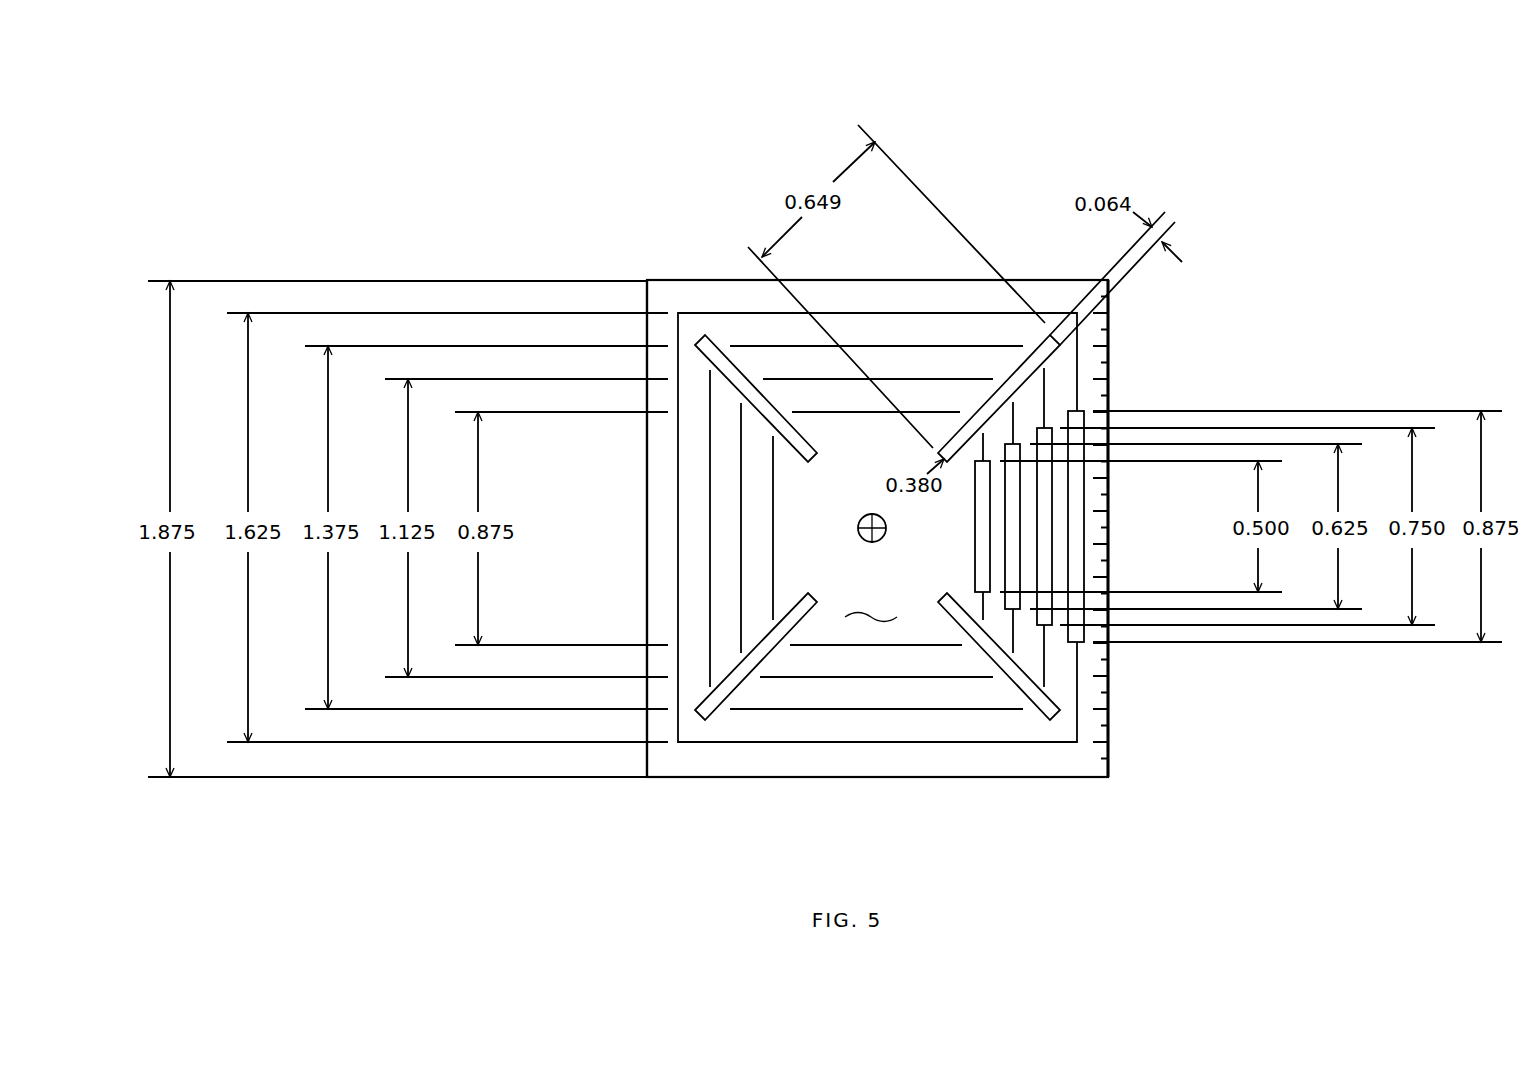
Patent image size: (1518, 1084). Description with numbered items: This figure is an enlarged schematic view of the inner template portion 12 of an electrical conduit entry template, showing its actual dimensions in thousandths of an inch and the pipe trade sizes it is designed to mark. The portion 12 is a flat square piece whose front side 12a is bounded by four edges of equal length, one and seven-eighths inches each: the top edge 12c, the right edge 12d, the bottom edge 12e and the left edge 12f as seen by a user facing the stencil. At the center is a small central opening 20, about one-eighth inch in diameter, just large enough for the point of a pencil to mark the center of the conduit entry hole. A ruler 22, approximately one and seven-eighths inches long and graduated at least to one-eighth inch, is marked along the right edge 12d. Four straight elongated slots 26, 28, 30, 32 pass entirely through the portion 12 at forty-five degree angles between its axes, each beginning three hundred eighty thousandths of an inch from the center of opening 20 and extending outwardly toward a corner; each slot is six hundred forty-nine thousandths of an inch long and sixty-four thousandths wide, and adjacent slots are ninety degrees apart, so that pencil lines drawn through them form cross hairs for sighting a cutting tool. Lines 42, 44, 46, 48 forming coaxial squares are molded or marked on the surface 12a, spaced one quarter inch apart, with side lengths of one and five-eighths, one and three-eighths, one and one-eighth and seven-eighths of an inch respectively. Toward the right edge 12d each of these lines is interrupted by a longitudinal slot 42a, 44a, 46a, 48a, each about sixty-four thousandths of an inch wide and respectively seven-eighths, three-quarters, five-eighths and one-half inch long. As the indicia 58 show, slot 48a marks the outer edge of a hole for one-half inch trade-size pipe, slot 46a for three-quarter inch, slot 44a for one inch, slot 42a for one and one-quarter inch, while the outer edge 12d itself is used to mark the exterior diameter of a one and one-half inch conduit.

The inner template portion 12 is at (1020, 217).
The front side 12a is at (871, 604).
The top edge 12c is at (1027, 280).
The right edge 12d is at (1110, 352).
The bottom edge 12e is at (1003, 777).
The left edge 12f is at (647, 508).
The central opening 20 is at (871, 525).
The ruler 22 is at (1108, 680).
The elongated slot 26 is at (1062, 340).
The elongated slot 28 is at (1002, 672).
The elongated slot 30 is at (715, 725).
The elongated slot 32 is at (708, 331).
The square line 42 is at (678, 578).
The longitudinal slot 42a is at (1076, 538).
The square line 44 is at (817, 710).
The longitudinal slot 44a is at (1050, 512).
The square line 46 is at (843, 677).
The longitudinal slot 46a is at (1012, 475).
The square line 48 is at (773, 549).
The longitudinal slot 48a is at (982, 532).
The indicia 58 is at (876, 284).